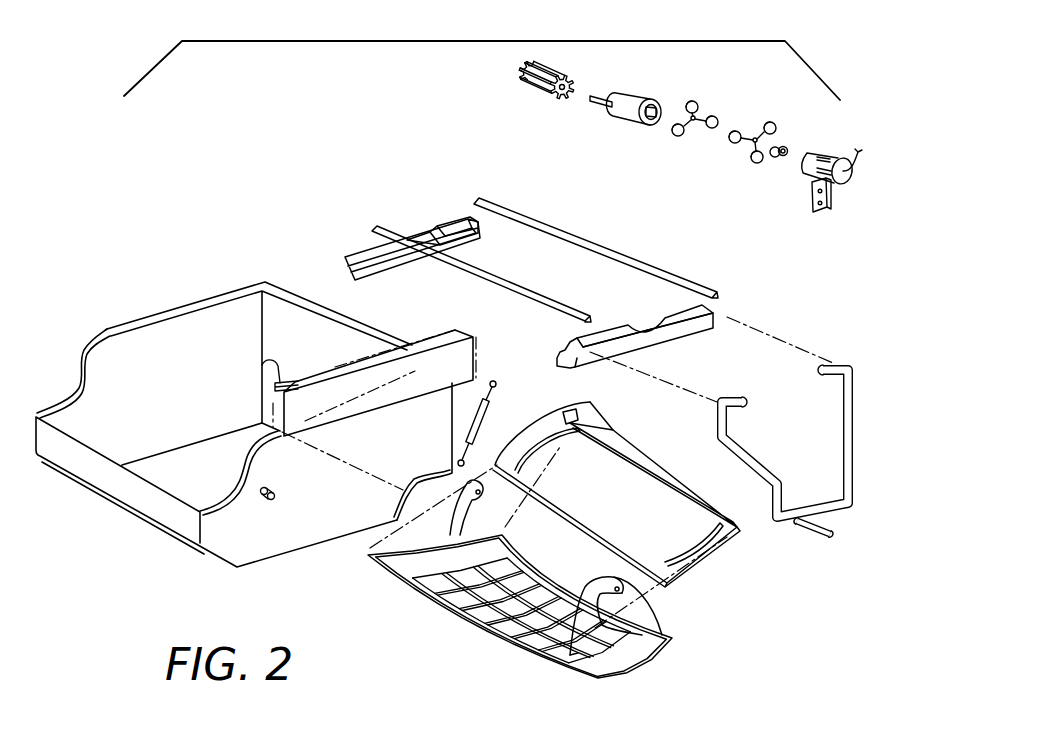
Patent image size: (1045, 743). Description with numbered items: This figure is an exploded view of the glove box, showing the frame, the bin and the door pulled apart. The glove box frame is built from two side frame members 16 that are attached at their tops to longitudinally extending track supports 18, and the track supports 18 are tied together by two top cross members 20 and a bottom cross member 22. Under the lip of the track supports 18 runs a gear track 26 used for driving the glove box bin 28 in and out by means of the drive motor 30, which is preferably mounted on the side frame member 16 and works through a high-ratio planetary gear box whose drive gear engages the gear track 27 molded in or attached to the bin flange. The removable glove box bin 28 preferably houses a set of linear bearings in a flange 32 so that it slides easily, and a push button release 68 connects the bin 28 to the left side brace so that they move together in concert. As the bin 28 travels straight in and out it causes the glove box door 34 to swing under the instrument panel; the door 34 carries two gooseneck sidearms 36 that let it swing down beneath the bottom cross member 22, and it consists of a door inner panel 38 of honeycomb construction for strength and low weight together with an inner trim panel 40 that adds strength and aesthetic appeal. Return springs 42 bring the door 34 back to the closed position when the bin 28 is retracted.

The side frame member 16 is at (853, 438).
The track support 18 is at (440, 228).
The top cross member 20 is at (612, 247).
The bottom cross member 22 is at (817, 540).
The gear track 26 is at (563, 357).
The gear track 27 is at (262, 368).
The glove box bin 28 is at (99, 353).
The drive motor 30 is at (749, 176).
The flange 32 is at (358, 428).
The glove box door 34 is at (408, 596).
The gooseneck sidearm 36 is at (660, 604).
The door inner panel 38 is at (506, 631).
The inner trim panel 40 is at (697, 528).
The return spring 42 is at (487, 401).
The push button release 68 is at (276, 494).